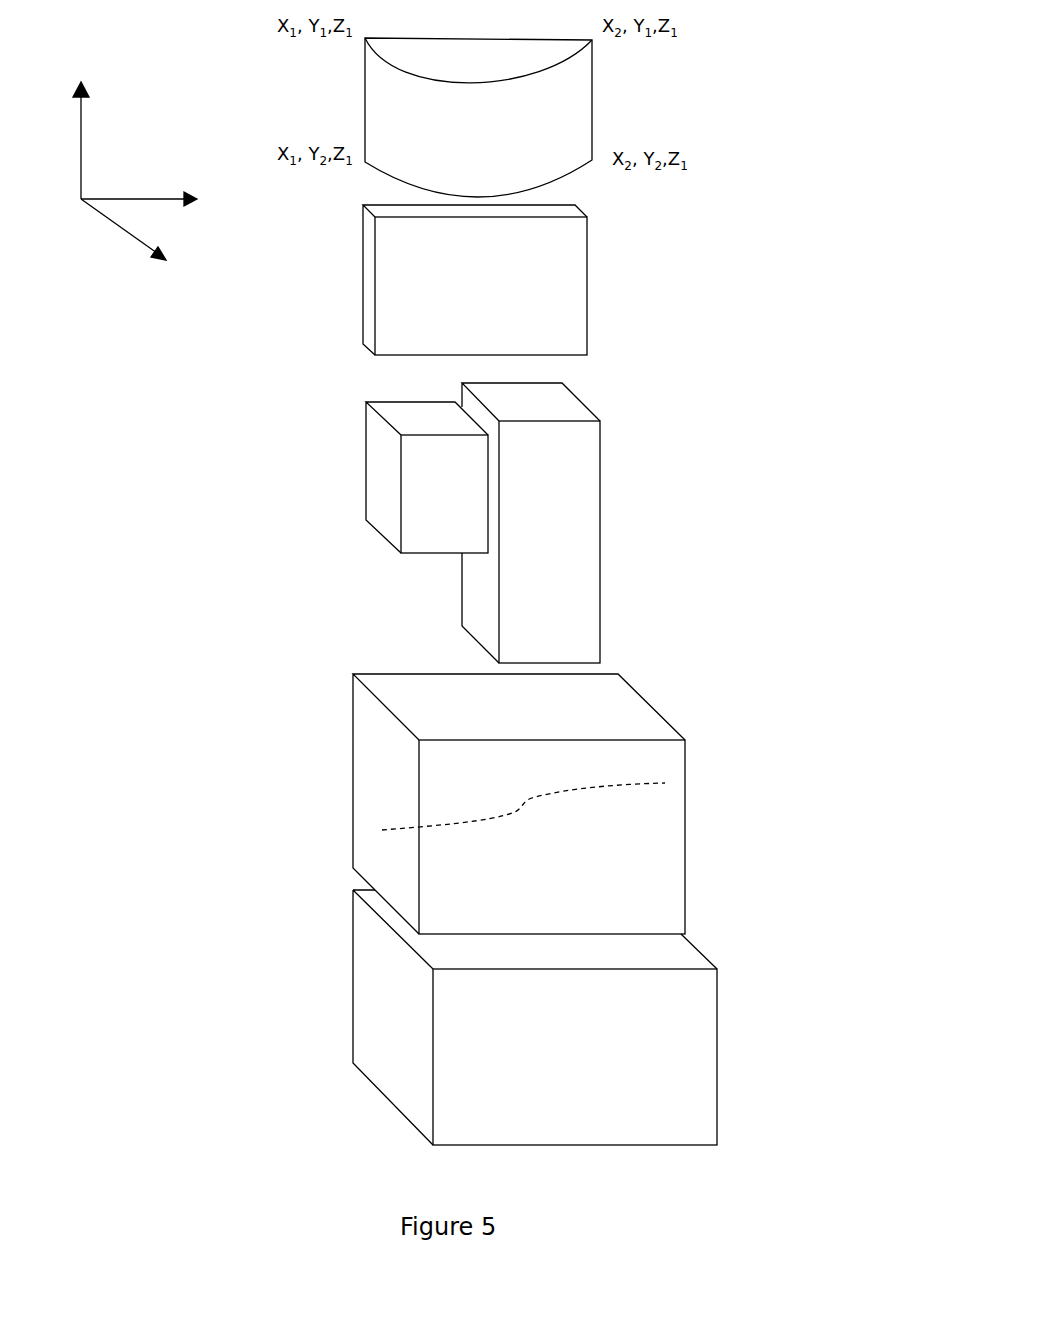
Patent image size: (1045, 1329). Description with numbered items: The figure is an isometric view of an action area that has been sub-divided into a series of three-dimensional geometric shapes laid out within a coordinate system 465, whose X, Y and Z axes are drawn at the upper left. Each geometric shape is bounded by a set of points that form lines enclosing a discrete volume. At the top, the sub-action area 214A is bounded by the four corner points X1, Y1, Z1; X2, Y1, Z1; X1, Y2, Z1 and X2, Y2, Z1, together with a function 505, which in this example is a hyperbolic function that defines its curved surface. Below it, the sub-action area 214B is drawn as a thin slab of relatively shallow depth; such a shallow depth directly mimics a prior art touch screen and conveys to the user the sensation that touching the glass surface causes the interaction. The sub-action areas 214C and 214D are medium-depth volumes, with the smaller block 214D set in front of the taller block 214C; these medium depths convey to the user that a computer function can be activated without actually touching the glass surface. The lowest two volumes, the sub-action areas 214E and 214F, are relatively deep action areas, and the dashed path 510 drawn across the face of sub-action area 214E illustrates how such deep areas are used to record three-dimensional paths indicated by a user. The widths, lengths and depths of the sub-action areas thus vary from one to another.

The coordinate system 465 is at (81, 199).
The sub-action area 214A is at (522, 128).
The function 505 is at (455, 83).
The sub-action area 214B is at (587, 267).
The sub-action area 214C is at (600, 498).
The sub-action area 214D is at (366, 463).
The sub-action area 214E is at (578, 804).
The path 510 is at (520, 812).
The sub-action area 214F is at (717, 1048).